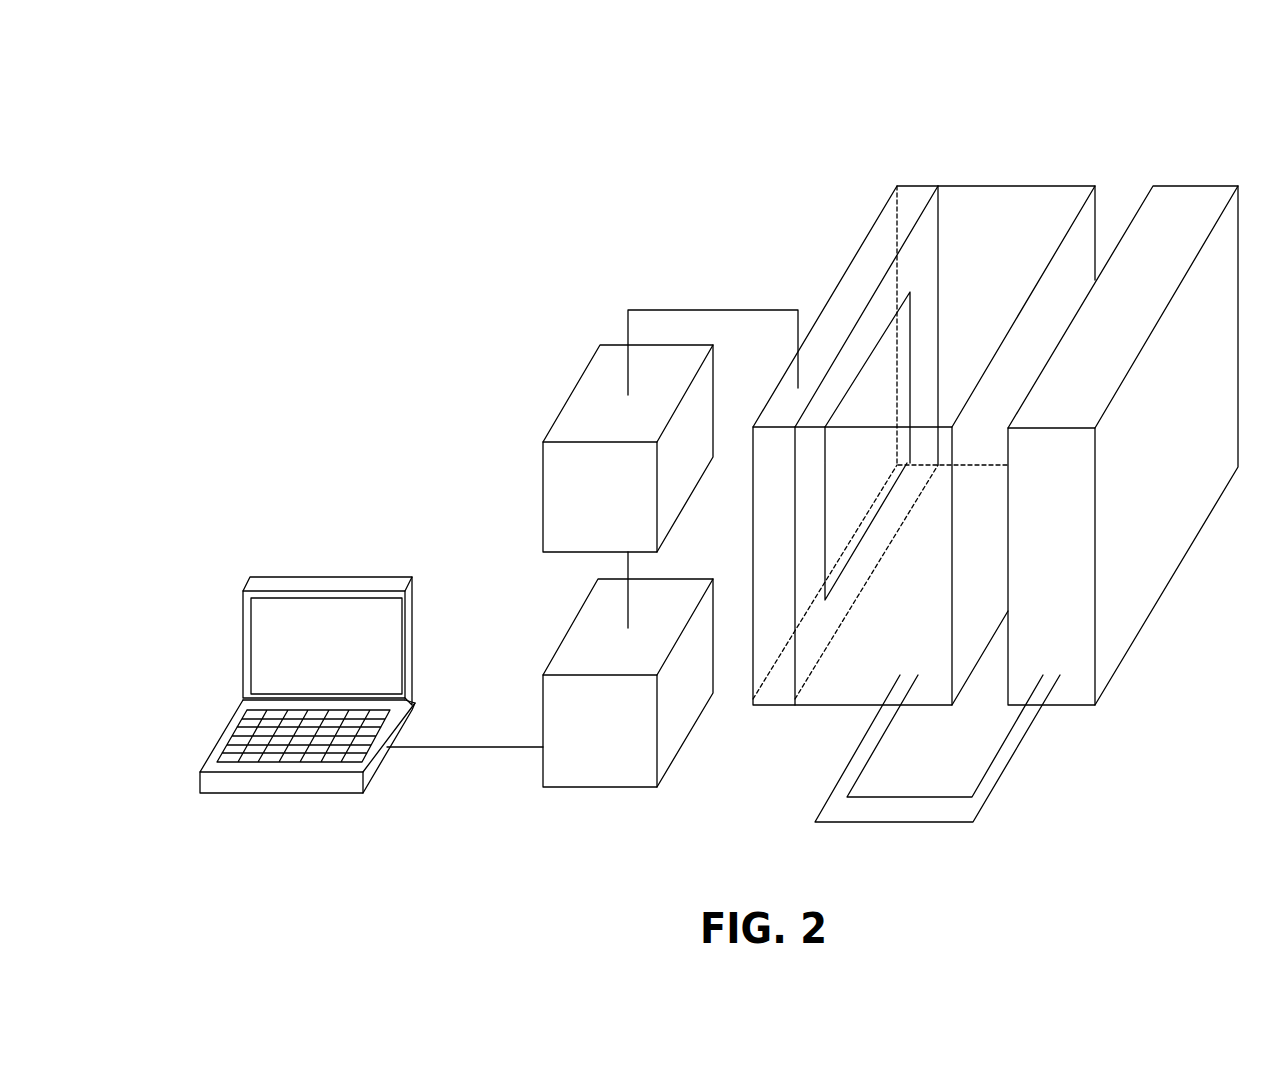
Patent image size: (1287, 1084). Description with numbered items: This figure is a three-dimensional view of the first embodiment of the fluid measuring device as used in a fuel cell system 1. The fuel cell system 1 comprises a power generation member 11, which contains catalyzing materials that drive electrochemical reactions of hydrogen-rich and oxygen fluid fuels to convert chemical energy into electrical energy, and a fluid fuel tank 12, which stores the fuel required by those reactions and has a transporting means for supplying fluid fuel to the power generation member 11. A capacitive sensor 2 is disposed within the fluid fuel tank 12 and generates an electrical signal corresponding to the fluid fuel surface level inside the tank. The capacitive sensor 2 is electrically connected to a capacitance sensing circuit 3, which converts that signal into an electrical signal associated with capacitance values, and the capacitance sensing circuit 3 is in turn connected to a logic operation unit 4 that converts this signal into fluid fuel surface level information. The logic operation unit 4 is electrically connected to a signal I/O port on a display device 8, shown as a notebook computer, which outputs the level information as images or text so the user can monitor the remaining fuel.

The fuel cell system 1 is at (1162, 138).
The power generation member 11 is at (1197, 186).
The fluid fuel tank 12 is at (997, 186).
The capacitive sensor 2 is at (880, 343).
The capacitance sensing circuit 3 is at (543, 498).
The logic operation unit 4 is at (543, 675).
The display device 8 is at (243, 701).